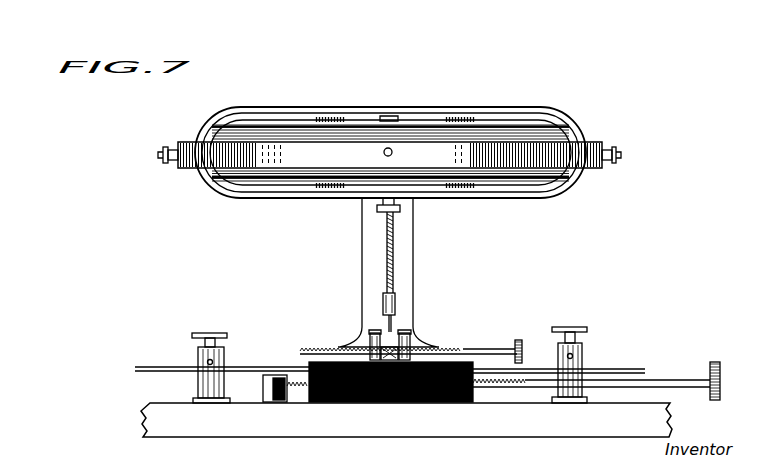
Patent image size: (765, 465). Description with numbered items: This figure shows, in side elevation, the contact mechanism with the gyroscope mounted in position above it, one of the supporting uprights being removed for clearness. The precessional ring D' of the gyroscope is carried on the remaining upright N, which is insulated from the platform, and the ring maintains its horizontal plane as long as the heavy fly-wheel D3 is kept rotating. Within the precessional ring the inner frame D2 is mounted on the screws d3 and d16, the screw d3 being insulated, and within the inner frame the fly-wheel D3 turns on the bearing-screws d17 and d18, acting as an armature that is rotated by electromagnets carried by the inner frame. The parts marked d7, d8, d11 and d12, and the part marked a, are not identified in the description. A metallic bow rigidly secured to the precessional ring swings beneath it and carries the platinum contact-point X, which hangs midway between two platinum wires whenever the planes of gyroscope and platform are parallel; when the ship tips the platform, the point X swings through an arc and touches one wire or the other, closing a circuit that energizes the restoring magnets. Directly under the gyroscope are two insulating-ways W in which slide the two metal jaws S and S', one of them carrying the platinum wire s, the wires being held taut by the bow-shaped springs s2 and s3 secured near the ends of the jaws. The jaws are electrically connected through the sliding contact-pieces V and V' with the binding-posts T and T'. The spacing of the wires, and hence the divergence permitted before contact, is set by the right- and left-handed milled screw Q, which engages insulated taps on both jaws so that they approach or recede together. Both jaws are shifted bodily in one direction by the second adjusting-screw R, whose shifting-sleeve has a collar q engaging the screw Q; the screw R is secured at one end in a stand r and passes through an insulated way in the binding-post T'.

The precessional ring D' is at (398, 149).
The inner frame D2 is at (322, 114).
The fly-wheel D3 is at (465, 123).
The screw d3 is at (168, 156).
The screw d16 is at (622, 151).
The coil segment d7 is at (318, 118).
The coil segment d11 is at (454, 116).
The coil segment d8 is at (303, 190).
The coil segment d12 is at (468, 188).
The bearing-screw d17 is at (390, 115).
The bearing-screw d18 is at (401, 211).
The spindle a is at (393, 253).
The platinum contact-point X is at (402, 330).
The upright N is at (372, 275).
The platinum wire s is at (372, 330).
The bow-shaped spring s3 is at (372, 337).
The jaw S is at (333, 330).
The jaw S' is at (438, 335).
The bow-shaped spring s2 is at (413, 339).
The milled screw Q is at (468, 352).
The sliding contact-piece V is at (222, 358).
The sliding contact-piece V' is at (559, 358).
The adjusting-screw R is at (537, 385).
The binding-post T is at (220, 368).
The binding-post T' is at (588, 365).
The stand r is at (278, 403).
The insulating-ways W is at (433, 402).
The collar q is at (383, 402).